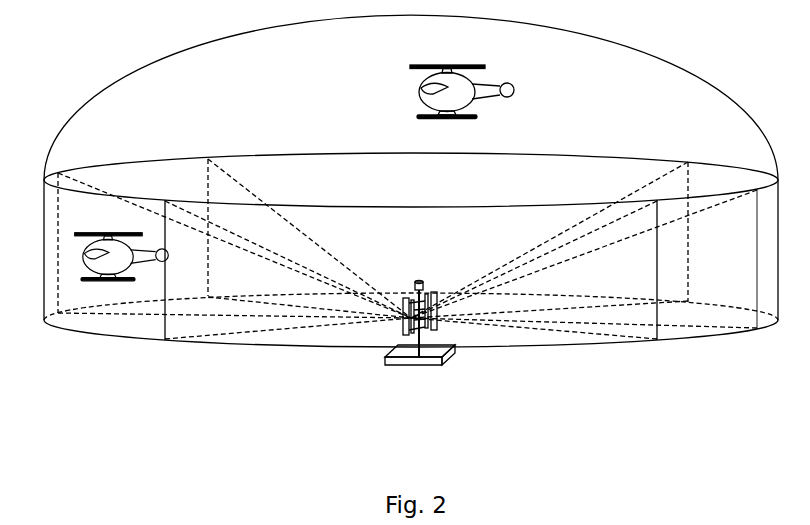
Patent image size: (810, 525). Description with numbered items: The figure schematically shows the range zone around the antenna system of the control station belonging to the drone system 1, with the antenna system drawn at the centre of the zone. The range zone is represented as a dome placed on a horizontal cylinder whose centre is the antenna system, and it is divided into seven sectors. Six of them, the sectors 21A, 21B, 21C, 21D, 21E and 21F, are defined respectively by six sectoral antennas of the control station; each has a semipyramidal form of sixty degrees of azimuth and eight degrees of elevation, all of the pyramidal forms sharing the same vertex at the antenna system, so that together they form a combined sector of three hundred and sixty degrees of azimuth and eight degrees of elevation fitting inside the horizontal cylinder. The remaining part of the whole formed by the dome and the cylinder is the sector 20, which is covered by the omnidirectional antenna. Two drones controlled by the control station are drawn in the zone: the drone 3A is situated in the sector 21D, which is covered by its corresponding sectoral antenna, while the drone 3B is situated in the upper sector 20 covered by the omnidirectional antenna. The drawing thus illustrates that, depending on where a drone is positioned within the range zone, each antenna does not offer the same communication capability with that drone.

The drone system 1 is at (385, 362).
The sector 20 is at (278, 102).
The sector 21A is at (698, 336).
The sector 21B is at (750, 264).
The sector 21C is at (464, 254).
The sector 21D is at (163, 313).
The sector 21E is at (161, 340).
The sector 21F is at (497, 347).
The drone 3A is at (169, 256).
The drone 3B is at (514, 88).